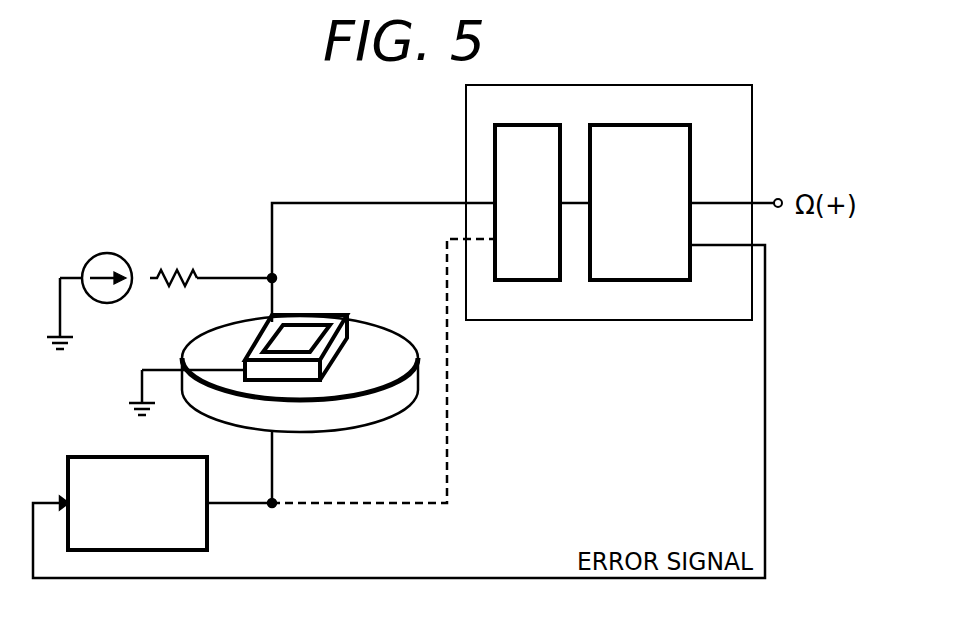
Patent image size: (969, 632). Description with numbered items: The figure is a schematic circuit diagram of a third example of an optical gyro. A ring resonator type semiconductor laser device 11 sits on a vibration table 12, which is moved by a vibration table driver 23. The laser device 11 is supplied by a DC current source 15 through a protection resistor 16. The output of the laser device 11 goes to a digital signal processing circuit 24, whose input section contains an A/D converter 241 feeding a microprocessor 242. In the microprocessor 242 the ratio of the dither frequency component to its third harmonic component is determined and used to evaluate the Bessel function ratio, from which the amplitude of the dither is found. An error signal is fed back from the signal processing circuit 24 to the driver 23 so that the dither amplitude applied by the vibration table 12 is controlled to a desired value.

The ring resonator type semiconductor laser device 11 is at (332, 316).
The vibration table 12 is at (372, 410).
The DC current source 15 is at (121, 256).
The protection resistor 16 is at (176, 268).
The vibration table driver 23 is at (207, 525).
The digital signal processing circuit 24 is at (609, 240).
The A/D converter 241 is at (540, 122).
The microprocessor 242 is at (665, 122).